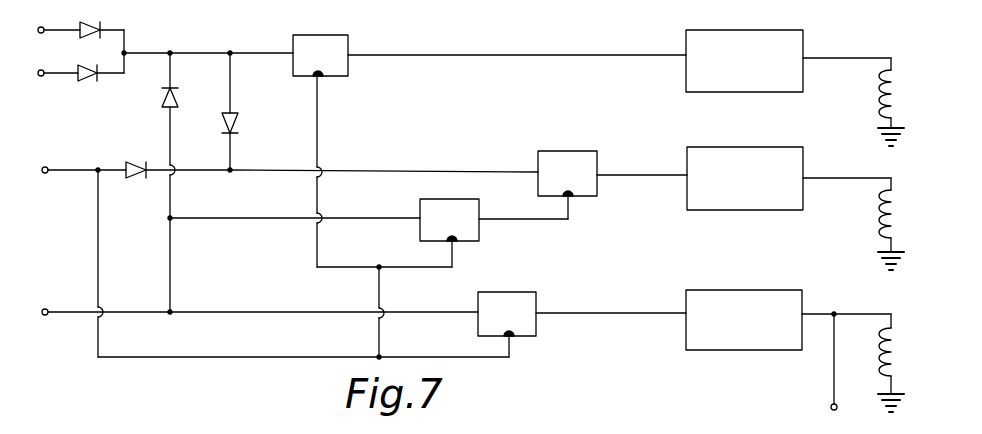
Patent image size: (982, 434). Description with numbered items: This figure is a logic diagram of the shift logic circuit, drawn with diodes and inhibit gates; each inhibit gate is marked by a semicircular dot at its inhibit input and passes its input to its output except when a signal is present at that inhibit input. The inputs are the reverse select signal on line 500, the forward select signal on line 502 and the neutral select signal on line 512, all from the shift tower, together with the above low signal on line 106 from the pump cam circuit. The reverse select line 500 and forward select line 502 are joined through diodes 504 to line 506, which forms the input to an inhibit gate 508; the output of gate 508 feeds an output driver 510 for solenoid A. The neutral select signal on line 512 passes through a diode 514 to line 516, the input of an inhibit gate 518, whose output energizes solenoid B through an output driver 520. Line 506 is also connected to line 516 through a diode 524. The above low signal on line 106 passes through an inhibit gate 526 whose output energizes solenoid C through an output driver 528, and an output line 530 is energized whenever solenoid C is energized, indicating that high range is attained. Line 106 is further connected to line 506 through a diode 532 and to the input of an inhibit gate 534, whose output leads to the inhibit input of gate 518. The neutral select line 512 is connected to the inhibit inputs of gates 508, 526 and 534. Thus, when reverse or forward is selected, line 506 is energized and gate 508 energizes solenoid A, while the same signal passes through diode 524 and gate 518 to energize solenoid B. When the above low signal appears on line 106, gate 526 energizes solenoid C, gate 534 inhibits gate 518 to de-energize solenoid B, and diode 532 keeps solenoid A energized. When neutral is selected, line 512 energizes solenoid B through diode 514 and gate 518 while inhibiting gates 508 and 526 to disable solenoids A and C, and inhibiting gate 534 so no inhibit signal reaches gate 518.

The reverse select line 500 is at (62, 31).
The forward select line 502 is at (58, 76).
The diodes 504 is at (88, 22).
The line 506 is at (212, 53).
The inhibit gate 508 is at (350, 50).
The output driver 510 is at (805, 52).
The neutral select line 512 is at (75, 172).
The diode 514 is at (132, 181).
The line 516 is at (368, 172).
The inhibit gate 518 is at (560, 150).
The output driver 520 is at (722, 148).
The diode 524 is at (240, 121).
The inhibit gate 526 is at (508, 291).
The output driver 528 is at (712, 290).
The output line 530 is at (834, 368).
The diode 532 is at (177, 92).
The inhibit gate 534 is at (430, 241).
The above low signal line 106 is at (70, 315).
The solenoid A is at (875, 88).
The solenoid B is at (876, 212).
The solenoid C is at (878, 356).